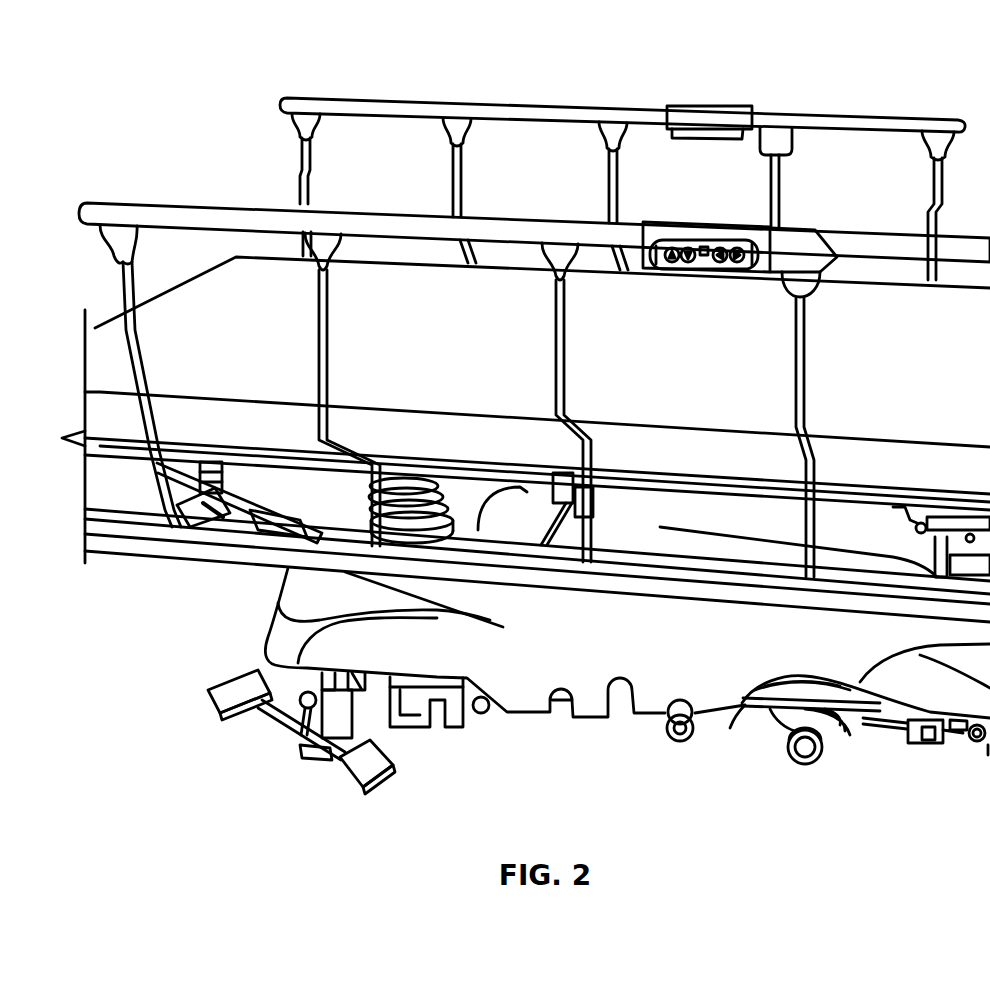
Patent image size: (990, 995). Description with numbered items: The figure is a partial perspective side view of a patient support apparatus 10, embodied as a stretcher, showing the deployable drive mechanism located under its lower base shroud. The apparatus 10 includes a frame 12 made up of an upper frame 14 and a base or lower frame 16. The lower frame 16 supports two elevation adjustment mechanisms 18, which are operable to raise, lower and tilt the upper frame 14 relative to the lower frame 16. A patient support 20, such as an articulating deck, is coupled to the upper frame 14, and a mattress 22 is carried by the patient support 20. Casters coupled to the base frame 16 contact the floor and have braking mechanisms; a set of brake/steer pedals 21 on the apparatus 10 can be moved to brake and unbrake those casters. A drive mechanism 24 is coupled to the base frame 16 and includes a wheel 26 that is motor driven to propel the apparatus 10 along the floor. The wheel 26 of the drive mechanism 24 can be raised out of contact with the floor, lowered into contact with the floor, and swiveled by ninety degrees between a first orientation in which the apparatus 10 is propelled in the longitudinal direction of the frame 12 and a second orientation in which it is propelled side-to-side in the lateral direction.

The patient support apparatus 10 is at (869, 93).
The frame 12 is at (211, 648).
The upper frame 14 is at (258, 458).
The lower frame 16 is at (413, 688).
The elevation adjustment mechanism 18 is at (416, 500).
The patient support 20 is at (192, 447).
The brake/steer pedals 21 is at (266, 724).
The mattress 22 is at (106, 326).
The drive mechanism 24 is at (797, 685).
The wheel 26 is at (780, 716).